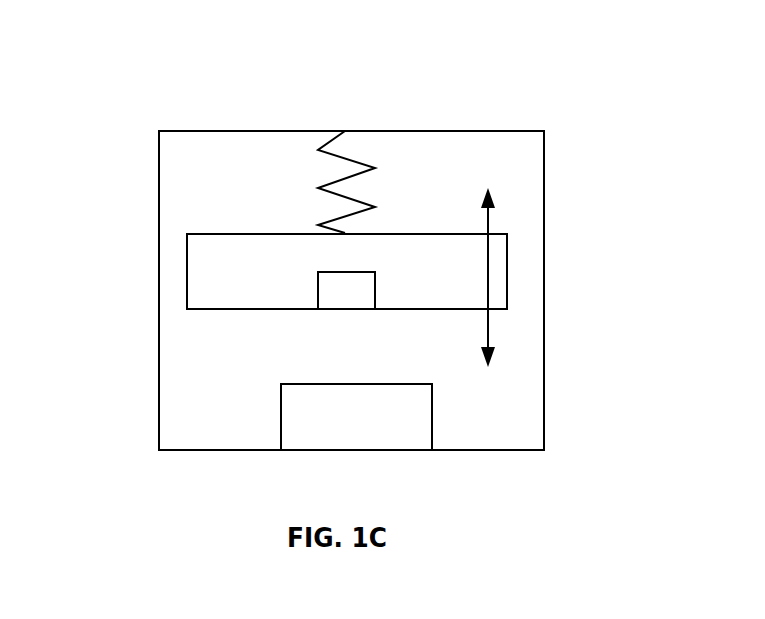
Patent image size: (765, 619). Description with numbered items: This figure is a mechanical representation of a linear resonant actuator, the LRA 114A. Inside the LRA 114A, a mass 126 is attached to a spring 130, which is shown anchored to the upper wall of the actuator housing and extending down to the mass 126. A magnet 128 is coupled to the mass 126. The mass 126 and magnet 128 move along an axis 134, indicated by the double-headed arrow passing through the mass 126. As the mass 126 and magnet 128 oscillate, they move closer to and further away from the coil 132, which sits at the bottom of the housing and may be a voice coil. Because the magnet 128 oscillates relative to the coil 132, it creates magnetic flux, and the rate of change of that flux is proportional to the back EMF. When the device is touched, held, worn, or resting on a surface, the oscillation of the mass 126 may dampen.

The LRA 114A is at (168, 98).
The mass 126 is at (347, 271).
The magnet 128 is at (346, 290).
The spring 130 is at (360, 160).
The coil 132 is at (356, 417).
The axis 134 is at (488, 337).